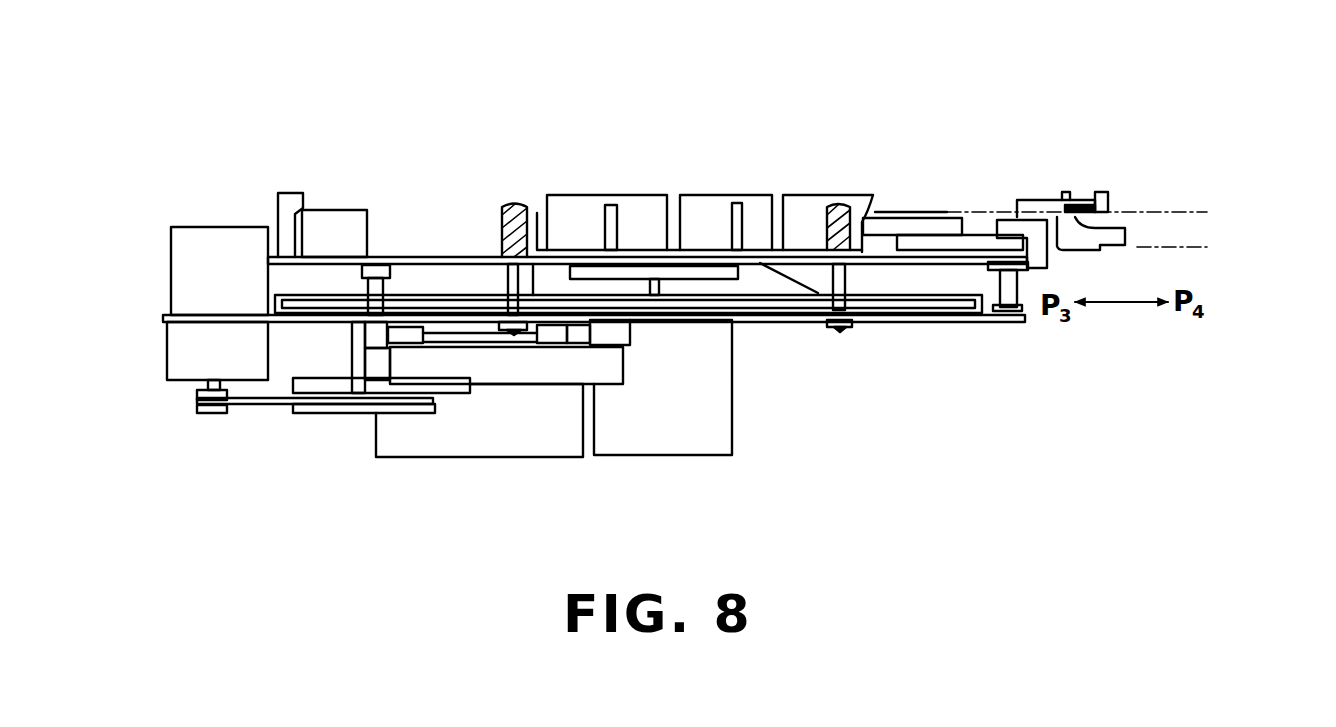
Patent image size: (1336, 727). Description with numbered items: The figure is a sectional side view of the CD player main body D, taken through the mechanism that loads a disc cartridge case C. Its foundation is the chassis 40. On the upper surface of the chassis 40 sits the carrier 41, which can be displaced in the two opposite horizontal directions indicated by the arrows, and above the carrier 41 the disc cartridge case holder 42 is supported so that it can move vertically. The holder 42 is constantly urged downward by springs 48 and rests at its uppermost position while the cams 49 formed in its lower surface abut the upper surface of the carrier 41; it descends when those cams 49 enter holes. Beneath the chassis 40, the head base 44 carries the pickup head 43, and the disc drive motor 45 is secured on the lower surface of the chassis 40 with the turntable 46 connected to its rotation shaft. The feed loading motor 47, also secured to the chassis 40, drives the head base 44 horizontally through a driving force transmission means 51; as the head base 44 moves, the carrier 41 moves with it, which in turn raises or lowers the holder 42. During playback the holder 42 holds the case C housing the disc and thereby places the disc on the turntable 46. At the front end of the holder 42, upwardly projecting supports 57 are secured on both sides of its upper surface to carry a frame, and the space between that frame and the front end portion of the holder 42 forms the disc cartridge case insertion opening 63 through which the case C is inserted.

The CD player main body D is at (630, 191).
The case C is at (1151, 211).
The chassis 40 is at (978, 322).
The carrier 41 is at (900, 313).
The disc cartridge case holder 42 is at (393, 255).
The pickup head 43 is at (436, 458).
The head base 44 is at (518, 368).
The disc drive motor 45 is at (732, 420).
The turntable 46 is at (703, 267).
The feed loading motor 47 is at (210, 227).
The springs 48 is at (500, 212).
The cams 49 is at (495, 273).
The driving force transmission means 51 is at (316, 418).
The supports 57 is at (1075, 250).
The disc cartridge case insertion opening 63 is at (1118, 228).